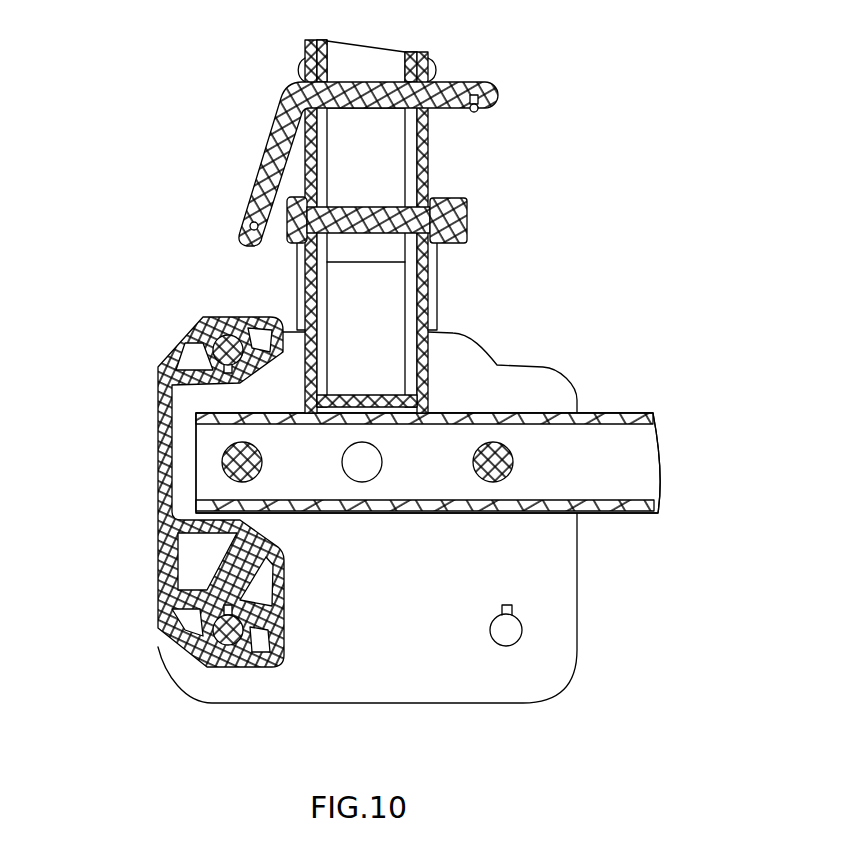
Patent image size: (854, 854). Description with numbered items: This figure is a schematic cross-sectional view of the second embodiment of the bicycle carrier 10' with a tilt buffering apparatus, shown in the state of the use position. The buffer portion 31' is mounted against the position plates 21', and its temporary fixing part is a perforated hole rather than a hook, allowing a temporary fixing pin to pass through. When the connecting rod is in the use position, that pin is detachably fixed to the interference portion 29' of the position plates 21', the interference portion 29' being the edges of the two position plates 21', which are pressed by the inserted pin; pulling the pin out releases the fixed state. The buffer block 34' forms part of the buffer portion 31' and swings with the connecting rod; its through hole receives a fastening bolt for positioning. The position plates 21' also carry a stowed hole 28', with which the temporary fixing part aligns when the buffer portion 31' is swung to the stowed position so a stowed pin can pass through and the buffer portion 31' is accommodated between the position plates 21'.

The bicycle carrier 10' is at (539, 226).
The position plates 21' is at (367, 552).
The stowed hole 28' is at (577, 652).
The interference portion 29' is at (182, 326).
The buffer portion 31' is at (179, 492).
The buffer block 34' is at (222, 661).